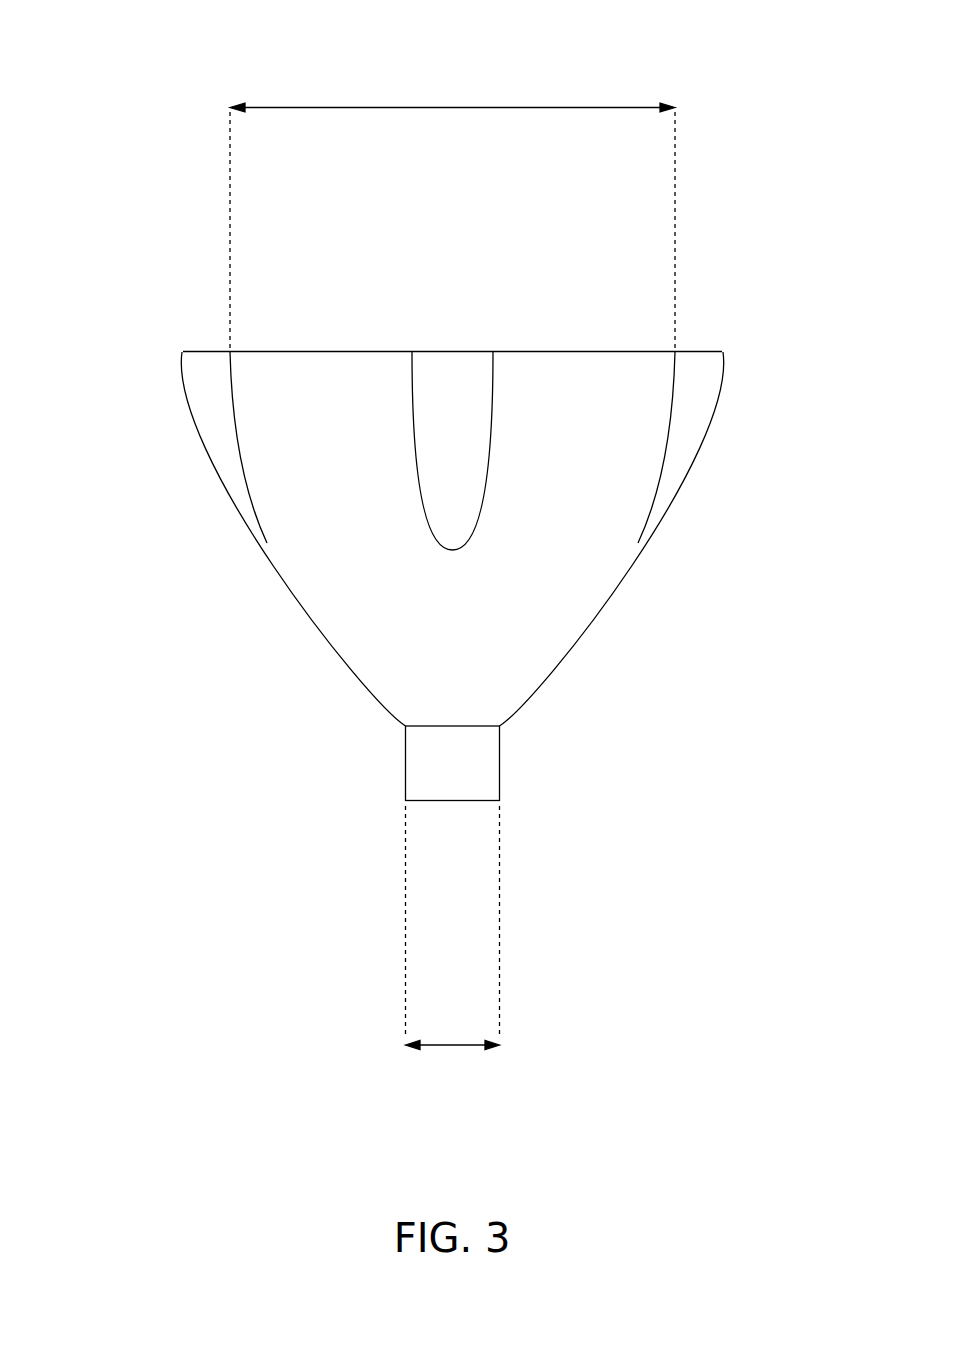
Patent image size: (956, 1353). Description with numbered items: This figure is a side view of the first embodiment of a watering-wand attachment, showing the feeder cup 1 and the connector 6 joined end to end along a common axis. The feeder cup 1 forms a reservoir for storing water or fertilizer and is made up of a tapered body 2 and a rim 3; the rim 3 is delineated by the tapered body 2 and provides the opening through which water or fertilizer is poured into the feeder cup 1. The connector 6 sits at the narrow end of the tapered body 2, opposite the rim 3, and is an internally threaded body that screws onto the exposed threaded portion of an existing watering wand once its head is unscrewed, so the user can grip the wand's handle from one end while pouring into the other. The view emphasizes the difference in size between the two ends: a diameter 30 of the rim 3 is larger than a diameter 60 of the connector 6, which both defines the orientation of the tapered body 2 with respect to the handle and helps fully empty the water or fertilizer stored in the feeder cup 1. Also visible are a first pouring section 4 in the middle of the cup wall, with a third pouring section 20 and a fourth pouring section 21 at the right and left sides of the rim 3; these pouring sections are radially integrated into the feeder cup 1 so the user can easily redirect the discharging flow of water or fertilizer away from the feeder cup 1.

The feeder cup 1 is at (164, 575).
The tapered body 2 is at (354, 672).
The rim 3 is at (360, 351).
The first pouring section 4 is at (418, 463).
The connector 6 is at (497, 782).
The third pouring section 20 is at (717, 390).
The fourth pouring section 21 is at (188, 392).
The diameter of the rim 30 is at (470, 107).
The diameter of the connector 60 is at (455, 1047).